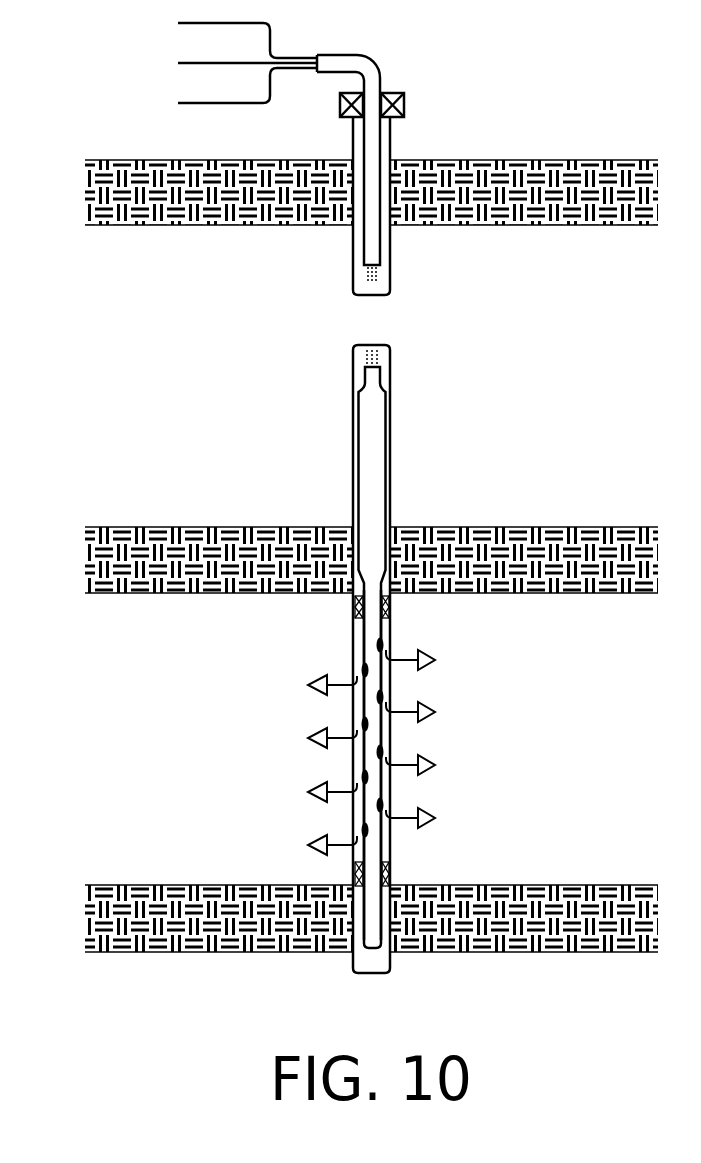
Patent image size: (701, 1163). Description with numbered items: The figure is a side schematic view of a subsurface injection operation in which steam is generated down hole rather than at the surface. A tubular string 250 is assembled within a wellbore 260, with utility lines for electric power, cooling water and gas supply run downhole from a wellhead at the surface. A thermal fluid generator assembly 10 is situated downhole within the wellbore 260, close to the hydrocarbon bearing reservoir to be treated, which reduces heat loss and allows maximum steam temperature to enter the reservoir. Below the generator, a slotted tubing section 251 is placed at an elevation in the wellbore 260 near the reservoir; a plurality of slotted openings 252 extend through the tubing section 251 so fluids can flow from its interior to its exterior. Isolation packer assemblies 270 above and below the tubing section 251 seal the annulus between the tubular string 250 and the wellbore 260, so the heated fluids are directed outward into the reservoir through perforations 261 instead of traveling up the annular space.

The thermal fluid generator assembly 10 is at (424, 649).
The tubular string 250 is at (340, 159).
The tubing section 251 is at (303, 765).
The slotted openings 252 is at (371, 738).
The wellbore 260 is at (427, 640).
The perforations 261 is at (413, 752).
The isolation packer assembly 270 is at (436, 741).